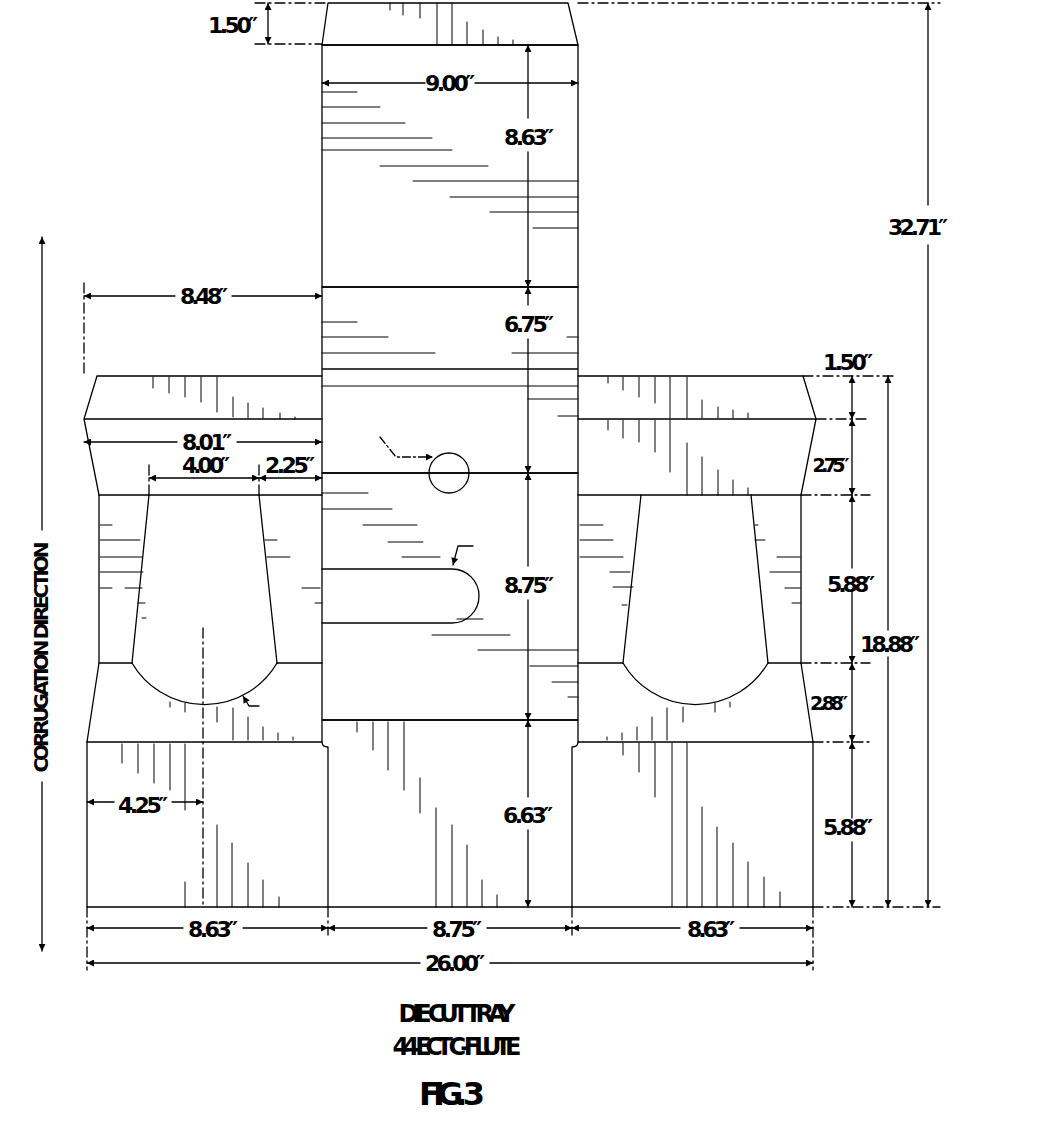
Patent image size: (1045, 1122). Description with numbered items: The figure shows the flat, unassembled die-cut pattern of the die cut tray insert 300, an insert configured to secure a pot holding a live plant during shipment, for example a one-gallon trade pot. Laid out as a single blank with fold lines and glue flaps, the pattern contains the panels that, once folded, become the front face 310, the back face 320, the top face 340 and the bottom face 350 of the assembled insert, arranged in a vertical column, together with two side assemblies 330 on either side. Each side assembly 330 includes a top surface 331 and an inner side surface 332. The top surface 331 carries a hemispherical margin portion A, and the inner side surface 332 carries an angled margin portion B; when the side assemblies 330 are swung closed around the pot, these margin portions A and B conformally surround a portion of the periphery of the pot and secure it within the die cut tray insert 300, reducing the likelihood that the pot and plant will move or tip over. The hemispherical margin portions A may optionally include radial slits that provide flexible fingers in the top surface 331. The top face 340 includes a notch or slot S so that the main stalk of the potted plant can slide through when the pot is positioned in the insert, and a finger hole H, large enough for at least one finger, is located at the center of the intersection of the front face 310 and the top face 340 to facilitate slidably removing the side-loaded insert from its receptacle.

The die cut tray insert 300 is at (457, 455).
The front face 310 is at (450, 390).
The back face 320 is at (349, 825).
The side assemblies 330 is at (105, 890).
The top surface 331 is at (457, 755).
The inner side surface 332 is at (456, 579).
The top face 340 is at (450, 596).
The bottom face 350 is at (405, 262).
The finger hole H is at (449, 451).
The slot S is at (384, 566).
The hemispherical margin portions A is at (189, 699).
The angled margin portions B is at (142, 567).